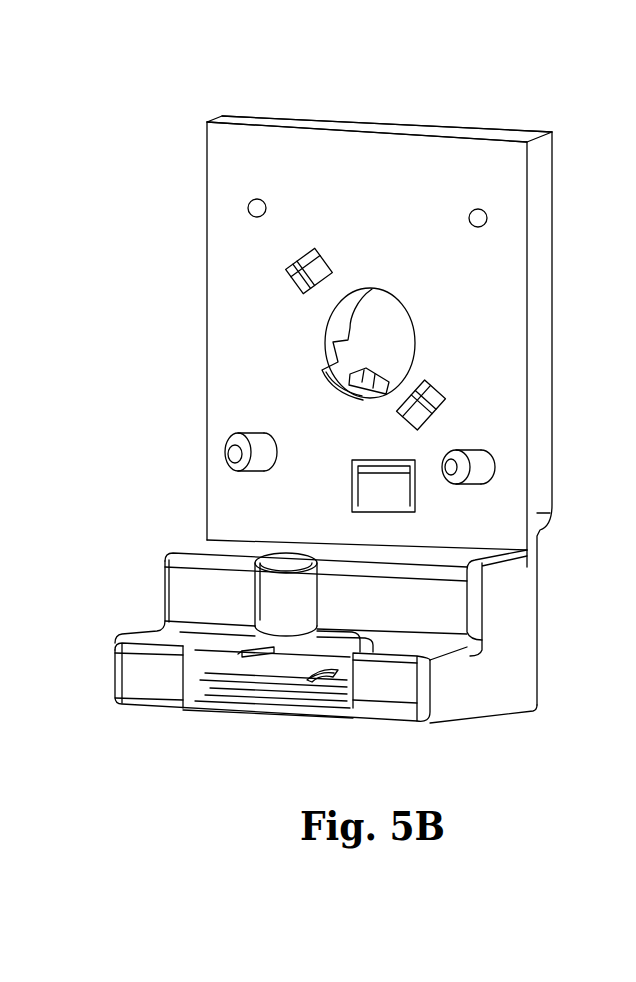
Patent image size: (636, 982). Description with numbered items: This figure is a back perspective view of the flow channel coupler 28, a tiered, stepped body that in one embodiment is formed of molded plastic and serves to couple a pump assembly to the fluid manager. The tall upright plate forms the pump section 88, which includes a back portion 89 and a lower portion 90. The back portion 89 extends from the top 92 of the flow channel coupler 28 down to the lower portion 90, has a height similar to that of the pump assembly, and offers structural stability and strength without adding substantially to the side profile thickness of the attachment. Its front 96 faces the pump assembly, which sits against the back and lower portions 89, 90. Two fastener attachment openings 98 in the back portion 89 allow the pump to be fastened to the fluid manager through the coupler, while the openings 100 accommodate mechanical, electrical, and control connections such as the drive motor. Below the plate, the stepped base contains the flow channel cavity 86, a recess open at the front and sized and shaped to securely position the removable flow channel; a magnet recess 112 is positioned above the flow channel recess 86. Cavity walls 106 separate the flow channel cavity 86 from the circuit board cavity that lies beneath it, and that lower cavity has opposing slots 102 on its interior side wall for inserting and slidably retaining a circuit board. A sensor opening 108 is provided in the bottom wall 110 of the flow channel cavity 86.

The flow channel coupler 28 is at (133, 152).
The flow channel cavity 86 is at (327, 705).
The pump section 88 is at (497, 343).
The back portion 89 is at (240, 332).
The lower portion 90 is at (470, 550).
The top 92 is at (517, 137).
The front 96 is at (242, 414).
The fastener attachment openings 98 is at (257, 208).
The openings 100 is at (400, 344).
The slots 102 is at (252, 658).
The cavity walls 106 is at (231, 672).
The sensor opening 108 is at (313, 674).
The bottom wall 110 is at (294, 701).
The magnet recess 112 is at (273, 562).